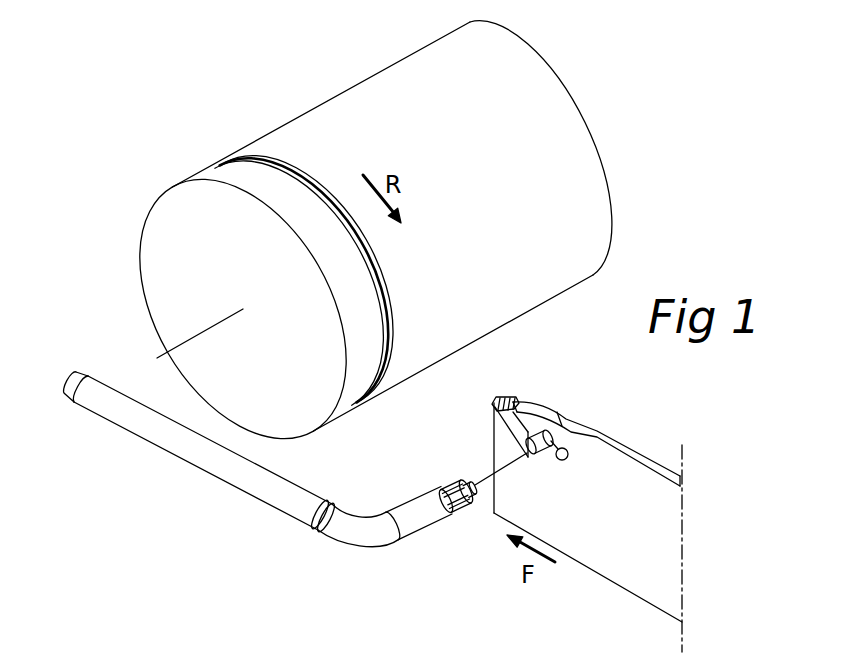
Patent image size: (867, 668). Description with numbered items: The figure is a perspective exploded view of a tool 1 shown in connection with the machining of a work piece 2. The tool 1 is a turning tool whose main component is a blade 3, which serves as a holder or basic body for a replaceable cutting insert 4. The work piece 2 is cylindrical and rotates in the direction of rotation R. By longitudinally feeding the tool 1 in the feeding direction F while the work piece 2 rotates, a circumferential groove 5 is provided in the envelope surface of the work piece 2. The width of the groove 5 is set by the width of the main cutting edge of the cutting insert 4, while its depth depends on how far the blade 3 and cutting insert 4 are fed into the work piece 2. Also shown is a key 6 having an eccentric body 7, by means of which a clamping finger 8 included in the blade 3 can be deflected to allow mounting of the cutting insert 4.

The tool 1 is at (591, 488).
The work piece 2 is at (281, 76).
The blade 3 is at (600, 577).
The cutting insert 4 is at (511, 381).
The groove 5 is at (364, 261).
The key 6 is at (382, 552).
The eccentric body 7 is at (461, 482).
The clamping finger 8 is at (570, 413).